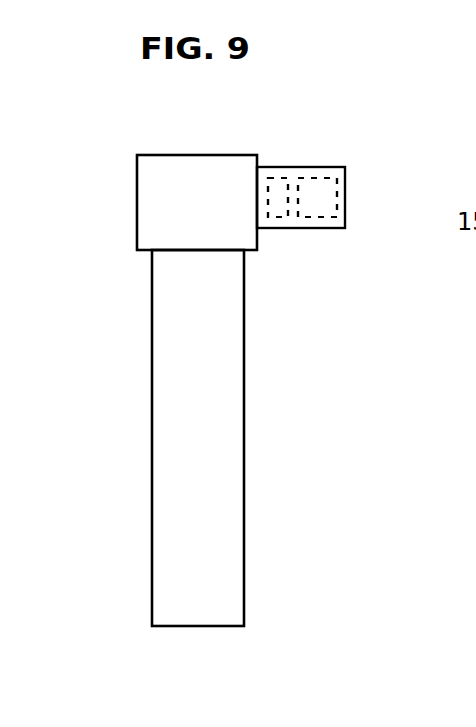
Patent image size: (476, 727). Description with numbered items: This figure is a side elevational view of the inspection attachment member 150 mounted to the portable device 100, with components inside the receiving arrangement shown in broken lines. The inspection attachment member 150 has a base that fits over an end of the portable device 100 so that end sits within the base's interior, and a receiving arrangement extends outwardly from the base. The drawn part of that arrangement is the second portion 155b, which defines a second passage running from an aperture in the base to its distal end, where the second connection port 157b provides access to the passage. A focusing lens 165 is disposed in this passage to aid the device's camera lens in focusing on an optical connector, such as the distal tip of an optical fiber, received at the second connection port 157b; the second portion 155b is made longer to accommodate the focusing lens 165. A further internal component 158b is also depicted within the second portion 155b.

The inspection attachment member 150 is at (152, 143).
The portable device 100 is at (194, 640).
The second connection port 157b is at (362, 190).
The second portion 155b is at (295, 165).
The focusing lens 165 is at (283, 217).
The second contact 158b is at (318, 218).